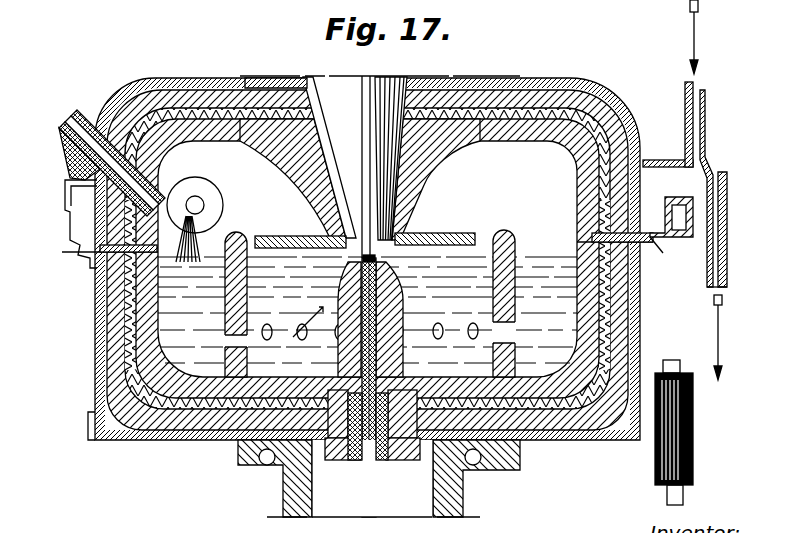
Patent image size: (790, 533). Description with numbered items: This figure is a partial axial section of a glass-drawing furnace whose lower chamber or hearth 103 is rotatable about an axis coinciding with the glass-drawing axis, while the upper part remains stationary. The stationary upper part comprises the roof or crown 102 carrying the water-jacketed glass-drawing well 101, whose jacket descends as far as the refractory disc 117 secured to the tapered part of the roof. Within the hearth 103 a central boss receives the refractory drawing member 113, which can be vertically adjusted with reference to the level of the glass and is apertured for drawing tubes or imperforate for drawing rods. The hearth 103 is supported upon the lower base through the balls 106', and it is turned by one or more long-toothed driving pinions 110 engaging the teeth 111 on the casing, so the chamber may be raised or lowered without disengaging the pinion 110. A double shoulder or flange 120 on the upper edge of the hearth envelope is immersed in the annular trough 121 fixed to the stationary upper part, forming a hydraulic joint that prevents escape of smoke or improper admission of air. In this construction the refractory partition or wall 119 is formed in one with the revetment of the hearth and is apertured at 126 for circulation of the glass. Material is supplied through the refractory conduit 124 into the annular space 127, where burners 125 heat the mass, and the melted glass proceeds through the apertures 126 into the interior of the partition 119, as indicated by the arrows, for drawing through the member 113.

The glass-drawing well 101 is at (411, 97).
The roof or crown 102 is at (508, 125).
The hearth 103 is at (554, 388).
The balls 106' is at (361, 453).
The driving pinion 110 is at (693, 418).
The teeth 111 is at (88, 442).
The refractory drawing member 113 is at (378, 275).
The refractory disc 117 is at (441, 236).
The refractory partition 119 is at (512, 243).
The double shoulder or flange 120 is at (648, 240).
The annular trough 121 is at (652, 248).
The refractory conduit 124 is at (105, 125).
The burner 125 is at (222, 198).
The apertures 126 is at (497, 334).
The annular space 127 is at (258, 332).